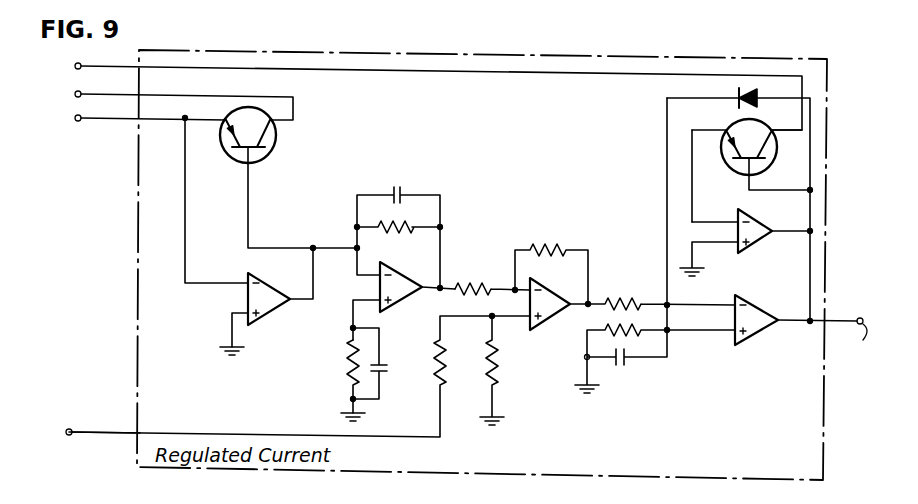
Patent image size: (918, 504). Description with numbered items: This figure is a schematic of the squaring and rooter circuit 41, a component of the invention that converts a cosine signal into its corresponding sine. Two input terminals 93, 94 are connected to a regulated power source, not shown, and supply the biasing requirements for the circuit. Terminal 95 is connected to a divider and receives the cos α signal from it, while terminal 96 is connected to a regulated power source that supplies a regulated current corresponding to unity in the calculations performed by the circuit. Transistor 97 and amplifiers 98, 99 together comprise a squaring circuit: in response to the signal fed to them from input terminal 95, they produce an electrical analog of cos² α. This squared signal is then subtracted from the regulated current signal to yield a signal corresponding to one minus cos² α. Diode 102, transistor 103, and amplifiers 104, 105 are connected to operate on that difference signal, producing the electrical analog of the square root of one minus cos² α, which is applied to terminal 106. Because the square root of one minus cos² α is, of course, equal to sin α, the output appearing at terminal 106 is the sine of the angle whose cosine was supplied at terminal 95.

The squaring and rooter circuit 41 is at (334, 33).
The input terminal 93 is at (75, 66).
The input terminal 94 is at (75, 94).
The terminal 95 is at (75, 118).
The terminal 96 is at (69, 429).
The transistor 97 is at (278, 145).
The amplifier 98 is at (292, 288).
The amplifier 99 is at (413, 280).
The diode 102 is at (737, 101).
The transistor 103 is at (728, 160).
The amplifier 104 is at (762, 226).
The amplifier 105 is at (784, 294).
The terminal 106 is at (851, 340).